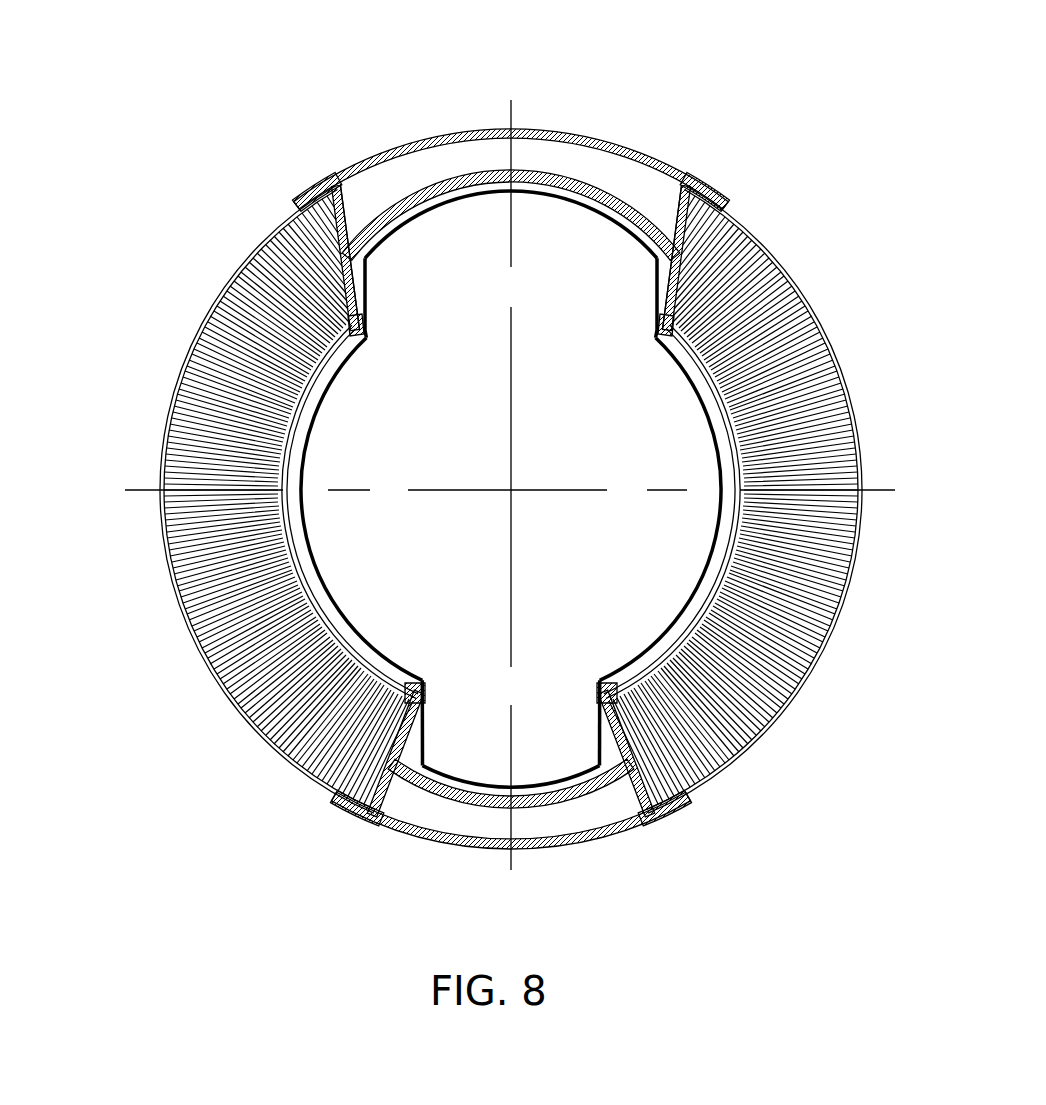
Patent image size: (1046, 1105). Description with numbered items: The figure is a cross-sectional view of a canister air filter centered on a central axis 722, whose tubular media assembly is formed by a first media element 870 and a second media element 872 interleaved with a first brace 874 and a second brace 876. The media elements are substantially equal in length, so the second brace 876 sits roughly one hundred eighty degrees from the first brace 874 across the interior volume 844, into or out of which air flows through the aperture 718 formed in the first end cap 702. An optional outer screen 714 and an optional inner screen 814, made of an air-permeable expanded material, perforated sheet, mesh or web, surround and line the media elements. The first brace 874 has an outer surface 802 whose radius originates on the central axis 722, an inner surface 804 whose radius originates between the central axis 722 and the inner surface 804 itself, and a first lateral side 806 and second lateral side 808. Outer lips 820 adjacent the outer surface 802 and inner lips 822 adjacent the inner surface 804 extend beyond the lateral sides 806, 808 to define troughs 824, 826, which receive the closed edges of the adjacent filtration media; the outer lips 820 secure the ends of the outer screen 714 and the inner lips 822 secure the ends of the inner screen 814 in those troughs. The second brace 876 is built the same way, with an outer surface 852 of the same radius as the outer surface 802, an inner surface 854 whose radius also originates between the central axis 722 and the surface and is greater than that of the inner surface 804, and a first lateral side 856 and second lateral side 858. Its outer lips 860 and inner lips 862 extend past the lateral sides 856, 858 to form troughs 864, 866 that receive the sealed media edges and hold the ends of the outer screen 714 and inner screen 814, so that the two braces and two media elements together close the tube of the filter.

The first end cap 702 is at (343, 625).
The outer screen 714 is at (813, 303).
The aperture 718 is at (594, 212).
The central axis 722 is at (511, 490).
The outer surface 802 is at (466, 130).
The inner surface 804 is at (435, 200).
The first lateral side 806 is at (338, 184).
The second lateral side 808 is at (688, 185).
The inner screen 814 is at (688, 340).
The outer lips 820 is at (307, 197).
The inner lips 822 is at (368, 335).
The trough 824 is at (336, 254).
The trough 826 is at (697, 242).
The interior volume 844 is at (597, 545).
The outer surface 852 is at (445, 850).
The inner surface 854 is at (484, 795).
The first lateral side 856 is at (436, 708).
The second lateral side 858 is at (595, 715).
The outer lips 860 is at (352, 815).
The inner lips 862 is at (423, 690).
The trough 864 is at (383, 741).
The trough 866 is at (641, 741).
The first media element 870 is at (779, 300).
The second media element 872 is at (196, 545).
The first brace 874 is at (511, 108).
The second brace 876 is at (541, 873).